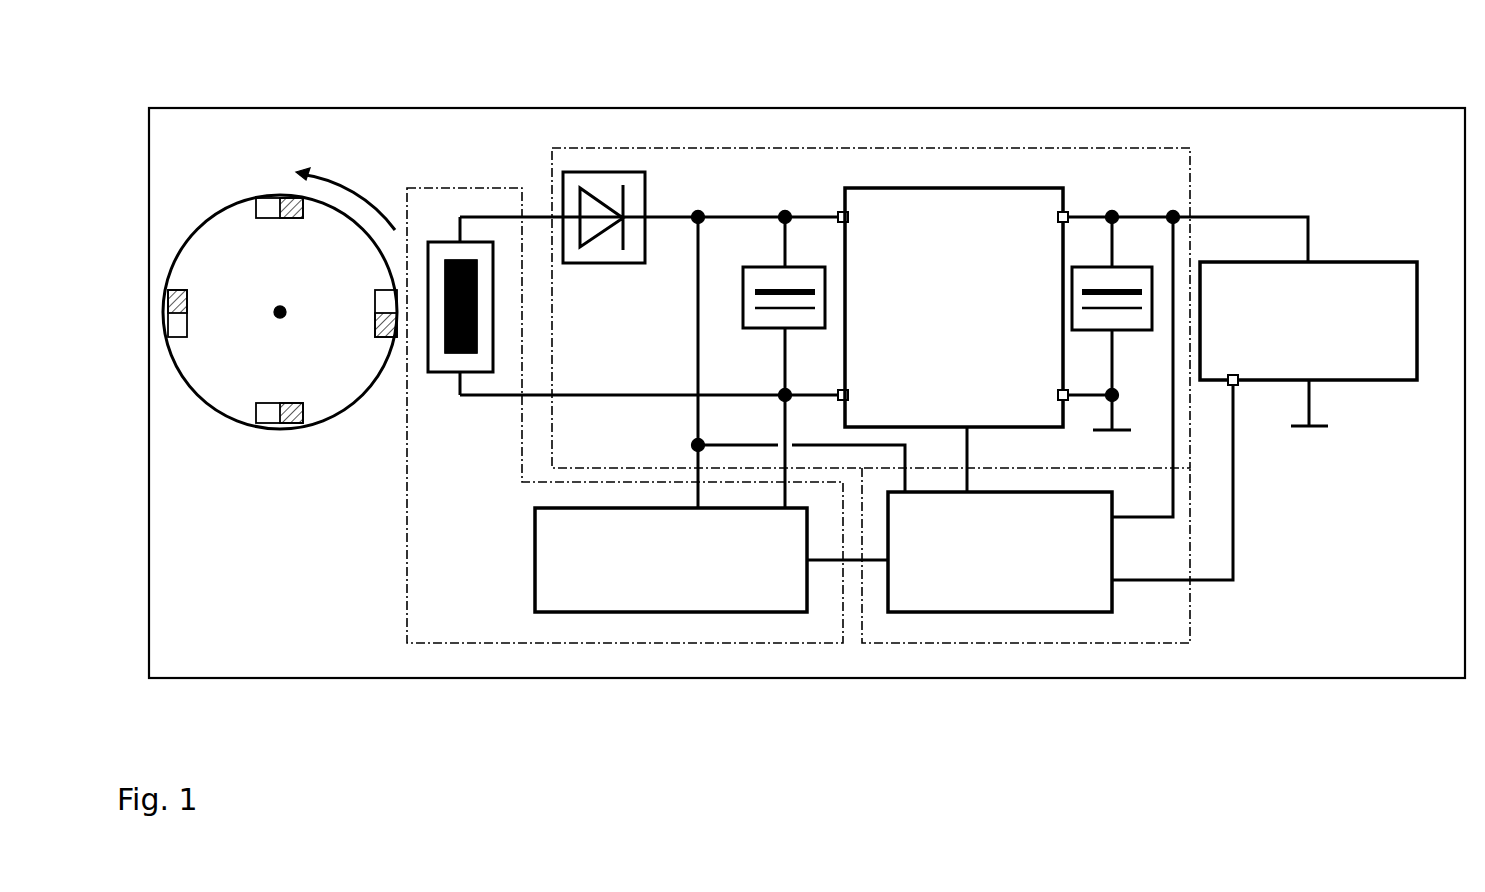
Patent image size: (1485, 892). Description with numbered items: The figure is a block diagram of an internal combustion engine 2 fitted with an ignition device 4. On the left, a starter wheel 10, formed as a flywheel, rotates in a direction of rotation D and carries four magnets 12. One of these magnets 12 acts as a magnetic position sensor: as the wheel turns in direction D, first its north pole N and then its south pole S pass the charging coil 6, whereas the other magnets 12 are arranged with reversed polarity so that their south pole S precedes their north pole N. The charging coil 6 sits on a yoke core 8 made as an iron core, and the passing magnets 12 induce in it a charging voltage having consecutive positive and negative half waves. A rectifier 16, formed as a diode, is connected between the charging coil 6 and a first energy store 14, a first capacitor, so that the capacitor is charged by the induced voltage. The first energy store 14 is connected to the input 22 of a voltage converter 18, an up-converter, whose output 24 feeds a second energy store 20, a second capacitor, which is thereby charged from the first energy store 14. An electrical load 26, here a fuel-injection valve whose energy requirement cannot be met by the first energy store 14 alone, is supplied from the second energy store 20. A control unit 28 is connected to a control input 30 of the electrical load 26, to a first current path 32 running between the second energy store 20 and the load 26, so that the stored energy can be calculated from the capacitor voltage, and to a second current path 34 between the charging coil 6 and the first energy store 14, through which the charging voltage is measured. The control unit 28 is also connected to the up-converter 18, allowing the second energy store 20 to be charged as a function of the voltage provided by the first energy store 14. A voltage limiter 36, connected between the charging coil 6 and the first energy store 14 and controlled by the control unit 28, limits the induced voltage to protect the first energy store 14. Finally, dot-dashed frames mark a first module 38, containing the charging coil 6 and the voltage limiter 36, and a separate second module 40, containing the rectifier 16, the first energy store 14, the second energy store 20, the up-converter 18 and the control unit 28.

The internal combustion engine 2 is at (307, 108).
The ignition device 4 is at (801, 392).
The charging coil 6 is at (447, 283).
The yoke core 8 is at (461, 306).
The starter wheel 10 is at (200, 222).
The magnets 12 is at (163, 342).
The first energy store 14 is at (770, 267).
The rectifier 16 is at (597, 170).
The voltage converter 18 is at (948, 188).
The second energy store 20 is at (1133, 333).
The input 22 is at (840, 212).
The output 24 is at (1068, 212).
The electrical load 26 is at (1347, 262).
The control unit 28 is at (1055, 612).
The control input 30 is at (1243, 387).
The first current path 32 is at (1143, 215).
The second current path 34 is at (662, 217).
The voltage limiter 36 is at (672, 612).
The first module 38 is at (478, 645).
The second module 40 is at (905, 645).
The direction of rotation D is at (358, 188).
The north pole N is at (165, 302).
The south pole S is at (168, 328).